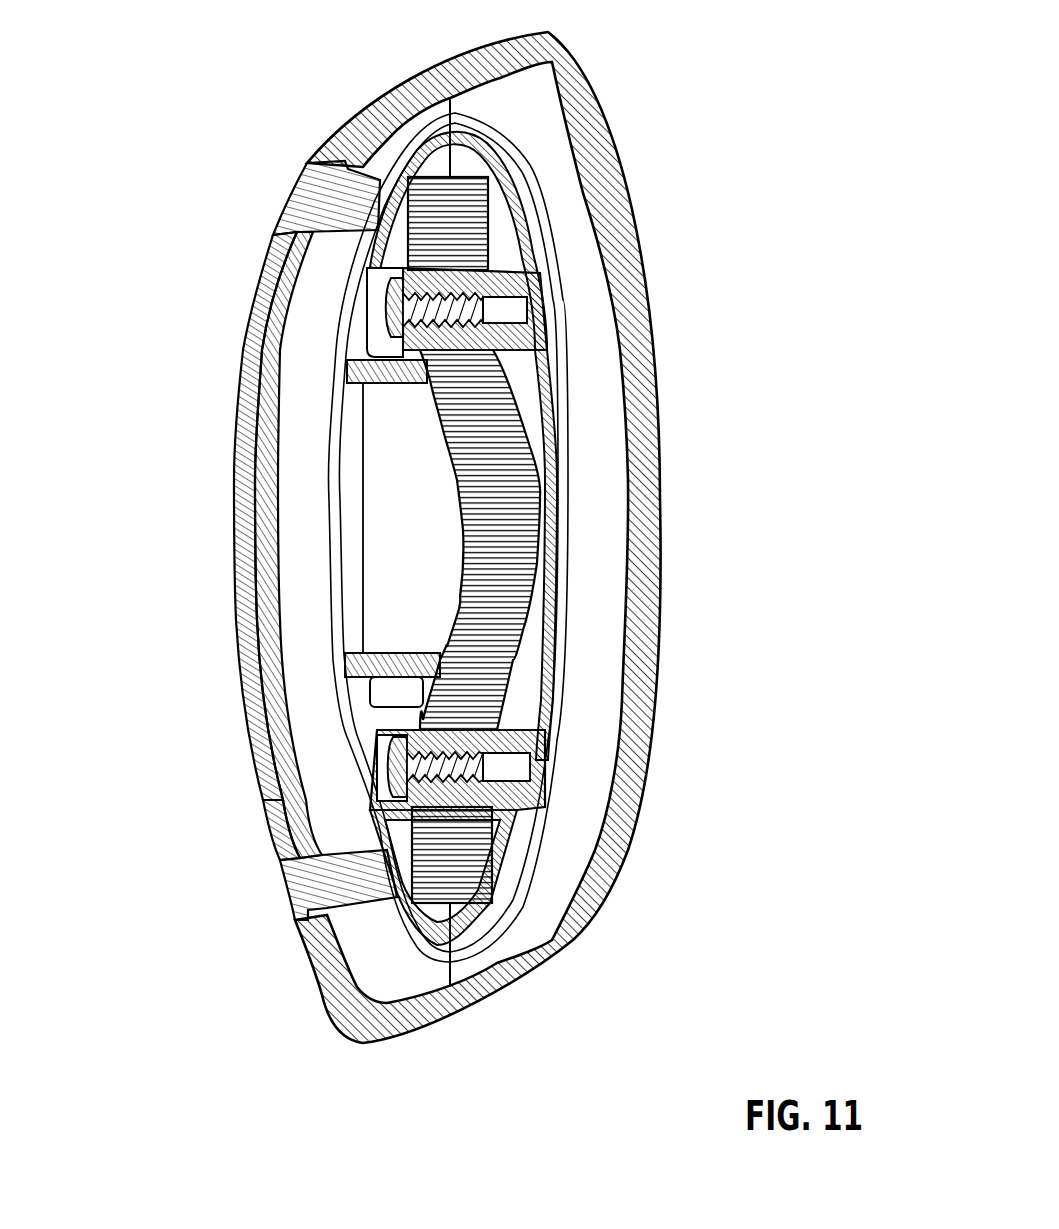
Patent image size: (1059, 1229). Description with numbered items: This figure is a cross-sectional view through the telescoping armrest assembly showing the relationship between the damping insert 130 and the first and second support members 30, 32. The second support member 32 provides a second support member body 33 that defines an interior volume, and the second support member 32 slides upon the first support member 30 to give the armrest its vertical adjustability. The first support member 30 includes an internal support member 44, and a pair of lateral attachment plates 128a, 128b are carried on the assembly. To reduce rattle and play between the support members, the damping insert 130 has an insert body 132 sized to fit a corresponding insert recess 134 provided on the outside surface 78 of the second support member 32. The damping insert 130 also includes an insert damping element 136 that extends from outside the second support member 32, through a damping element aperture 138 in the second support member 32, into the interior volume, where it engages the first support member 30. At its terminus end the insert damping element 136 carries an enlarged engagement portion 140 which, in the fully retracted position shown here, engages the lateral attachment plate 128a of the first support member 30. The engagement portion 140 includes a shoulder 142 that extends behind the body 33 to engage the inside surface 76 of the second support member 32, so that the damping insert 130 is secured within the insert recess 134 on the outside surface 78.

The first support member 30 is at (523, 793).
The second support member 32 is at (552, 537).
The second support member body 33 is at (645, 765).
The internal support member 44 is at (468, 197).
The inside surface 76 is at (262, 620).
The outside surface 78 is at (552, 537).
The lateral attachment plate 128a is at (372, 713).
The lateral attachment plate 128b is at (523, 277).
The damping insert 130 is at (187, 516).
The insert body 132 is at (252, 413).
The insert recess 134 is at (280, 803).
The insert damping element 136 is at (251, 257).
The damping element aperture 138 is at (326, 198).
The enlarged engagement portion 140 is at (251, 257).
The shoulder 142 is at (278, 860).